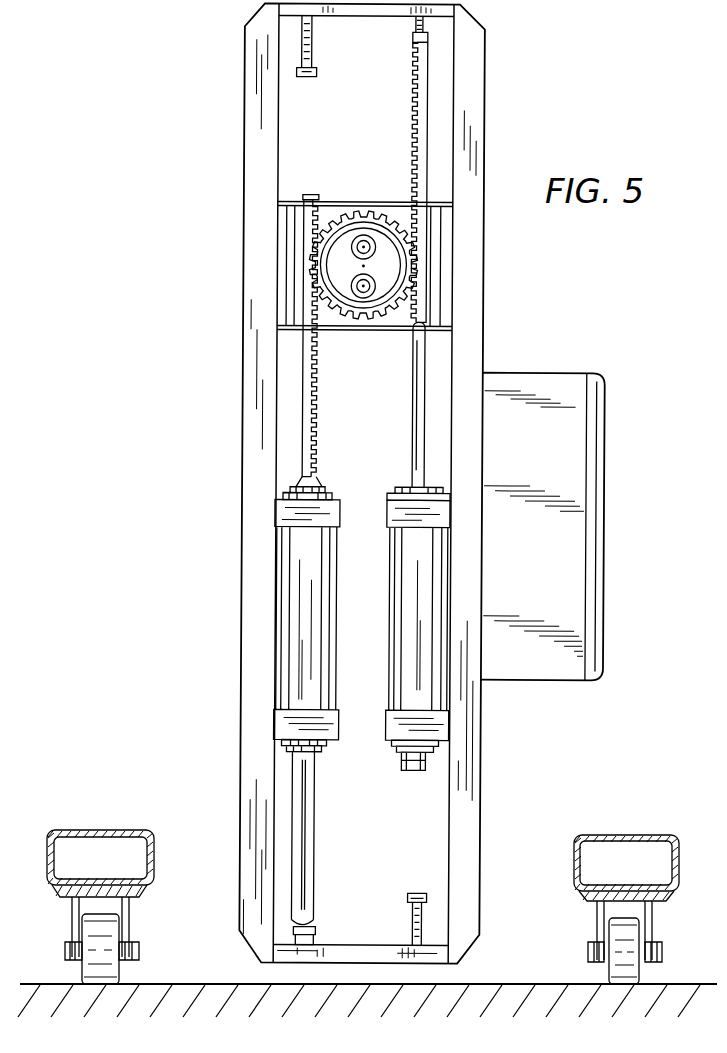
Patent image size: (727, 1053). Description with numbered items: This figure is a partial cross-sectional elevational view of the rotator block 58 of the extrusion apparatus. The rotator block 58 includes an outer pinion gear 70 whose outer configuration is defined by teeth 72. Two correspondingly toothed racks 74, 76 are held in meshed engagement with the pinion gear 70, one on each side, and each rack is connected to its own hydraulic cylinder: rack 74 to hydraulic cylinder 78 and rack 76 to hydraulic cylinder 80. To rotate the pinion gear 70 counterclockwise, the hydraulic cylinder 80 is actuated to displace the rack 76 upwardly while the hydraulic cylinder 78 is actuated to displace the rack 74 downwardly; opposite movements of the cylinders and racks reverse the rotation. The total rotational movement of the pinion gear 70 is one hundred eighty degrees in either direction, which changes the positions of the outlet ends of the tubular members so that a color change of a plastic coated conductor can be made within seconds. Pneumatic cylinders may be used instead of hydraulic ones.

The rotator block 58 is at (328, 206).
The outer pinion gear 70 is at (377, 217).
The teeth 72 is at (372, 322).
The rack 74 is at (302, 435).
The rack 76 is at (417, 113).
The hydraulic cylinder 78 is at (310, 598).
The hydraulic cylinder 80 is at (410, 663).